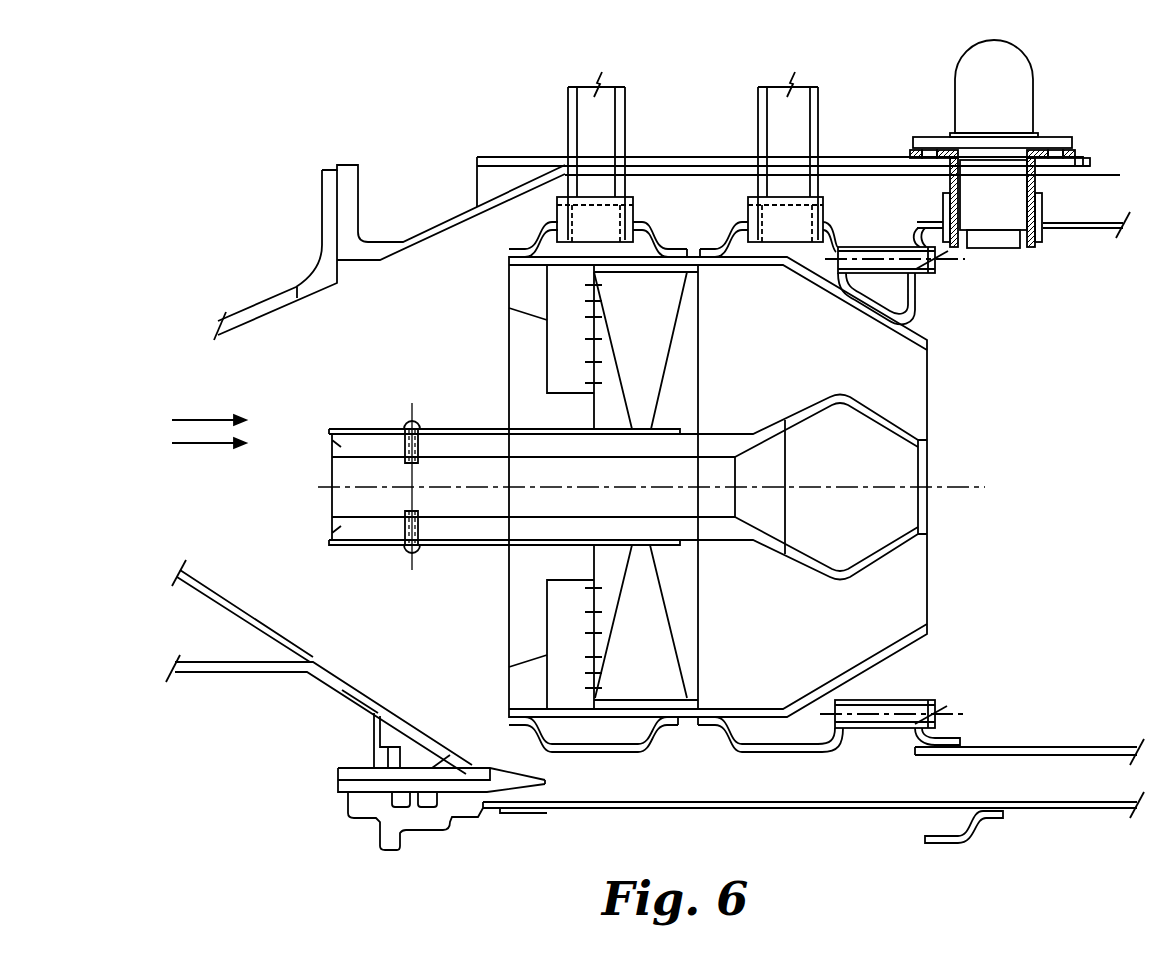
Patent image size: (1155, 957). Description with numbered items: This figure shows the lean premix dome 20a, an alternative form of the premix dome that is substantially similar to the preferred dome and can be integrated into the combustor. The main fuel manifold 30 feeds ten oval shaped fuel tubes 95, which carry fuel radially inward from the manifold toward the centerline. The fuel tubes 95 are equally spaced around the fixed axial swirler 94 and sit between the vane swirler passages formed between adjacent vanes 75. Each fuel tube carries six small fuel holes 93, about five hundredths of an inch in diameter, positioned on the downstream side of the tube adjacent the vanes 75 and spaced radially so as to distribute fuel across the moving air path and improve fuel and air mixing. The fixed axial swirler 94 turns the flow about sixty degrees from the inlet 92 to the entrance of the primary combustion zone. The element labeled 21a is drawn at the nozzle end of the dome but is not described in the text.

The lean premix dome 20a is at (670, 789).
The combustor liner nozzle 21a is at (897, 508).
The main fuel manifold 30 is at (598, 290).
The vanes 75 is at (667, 293).
The inlet 92 is at (497, 373).
The fuel holes 93 is at (636, 242).
The fixed axial swirler 94 is at (658, 358).
The oval fuel tubes 95 is at (553, 348).